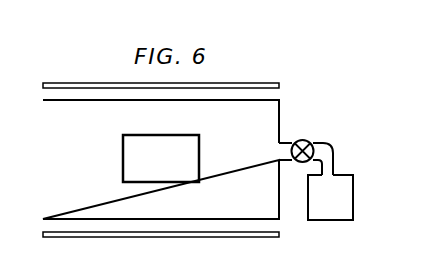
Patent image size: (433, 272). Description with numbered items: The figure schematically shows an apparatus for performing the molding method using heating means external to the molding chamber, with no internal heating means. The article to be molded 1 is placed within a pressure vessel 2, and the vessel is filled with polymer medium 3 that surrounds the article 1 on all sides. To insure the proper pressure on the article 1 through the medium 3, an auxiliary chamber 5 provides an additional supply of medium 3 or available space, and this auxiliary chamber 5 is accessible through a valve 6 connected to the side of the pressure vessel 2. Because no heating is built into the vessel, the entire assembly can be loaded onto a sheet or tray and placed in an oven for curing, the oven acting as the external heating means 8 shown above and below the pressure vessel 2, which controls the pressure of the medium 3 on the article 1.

The article to be molded 1 is at (168, 165).
The pressure vessel 2 is at (278, 98).
The polymer medium 3 is at (166, 126).
The auxiliary chamber 5 is at (296, 140).
The valve 6 is at (330, 181).
The external heating means 8 is at (65, 82).